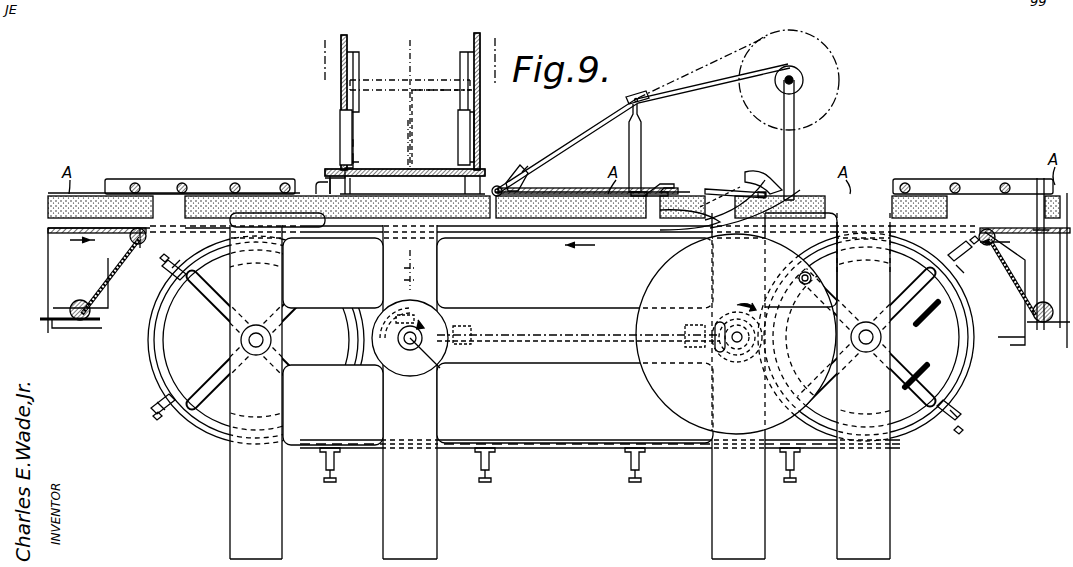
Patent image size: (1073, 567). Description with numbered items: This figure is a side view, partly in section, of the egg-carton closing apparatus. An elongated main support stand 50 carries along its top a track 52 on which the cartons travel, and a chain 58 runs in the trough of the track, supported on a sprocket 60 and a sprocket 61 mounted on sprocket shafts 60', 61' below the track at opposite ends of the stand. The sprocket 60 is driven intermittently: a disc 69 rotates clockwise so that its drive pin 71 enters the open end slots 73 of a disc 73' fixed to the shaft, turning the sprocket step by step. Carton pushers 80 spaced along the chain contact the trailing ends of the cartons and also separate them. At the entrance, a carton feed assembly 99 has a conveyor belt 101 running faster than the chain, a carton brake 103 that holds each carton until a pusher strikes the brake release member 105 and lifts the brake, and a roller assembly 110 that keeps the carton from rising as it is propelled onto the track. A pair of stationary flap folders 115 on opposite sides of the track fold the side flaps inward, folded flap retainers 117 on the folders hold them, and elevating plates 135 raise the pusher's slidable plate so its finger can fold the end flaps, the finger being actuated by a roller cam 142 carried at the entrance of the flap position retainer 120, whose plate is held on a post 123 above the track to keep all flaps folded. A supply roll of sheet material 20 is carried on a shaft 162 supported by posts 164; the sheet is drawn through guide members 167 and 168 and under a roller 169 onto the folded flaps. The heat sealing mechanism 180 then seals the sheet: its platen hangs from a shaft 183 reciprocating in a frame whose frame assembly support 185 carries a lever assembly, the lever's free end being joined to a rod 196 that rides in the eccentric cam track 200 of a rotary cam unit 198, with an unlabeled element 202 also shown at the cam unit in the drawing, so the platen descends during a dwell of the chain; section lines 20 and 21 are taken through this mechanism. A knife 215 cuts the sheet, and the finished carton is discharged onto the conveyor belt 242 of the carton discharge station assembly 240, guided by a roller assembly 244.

The sheet material 20 is at (344, 31).
The section line 21 is at (526, 31).
The main support stand 50 is at (230, 512).
The track 52 is at (623, 232).
The chain 58 is at (525, 222).
The sprocket 60 is at (887, 337).
The sprocket shaft 60' is at (861, 180).
The sprocket 61 is at (256, 340).
The sprocket shaft 61' is at (256, 320).
The disc 69 is at (648, 267).
The drive pin 71 is at (800, 295).
The open end slots 73 is at (926, 170).
The disc 73' is at (940, 211).
The carton pushers 80 is at (156, 426).
The carton feed assembly 99 is at (1056, 350).
The conveyor belt 101 is at (1008, 228).
The carton brake 103 is at (1023, 186).
The brake release member 105 is at (1012, 340).
The roller assembly 110 is at (940, 178).
The flap folders 115 is at (766, 172).
The folded flap retainers 117 is at (716, 188).
The flap position retainer 120 is at (580, 180).
The post 123 is at (640, 146).
The elevating plates 135 is at (672, 228).
The roller cam 142 is at (676, 182).
The shaft 162 is at (806, 82).
The posts 164 is at (802, 121).
The guide member 167 is at (648, 78).
The guide member 168 is at (523, 168).
The roller 169 is at (499, 185).
The heat sealing mechanism 180 is at (389, 160).
The shaft 183 is at (340, 64).
The frame assembly support 185 is at (358, 62).
The rod 196 is at (418, 144).
The rotary cam unit 198 is at (430, 312).
The cam track 200 is at (412, 374).
The crank arm 202 is at (438, 368).
The knife 215 is at (320, 180).
The carton discharge station assembly 240 is at (58, 261).
The conveyor belt 242 is at (129, 284).
The roller assembly 244 is at (230, 184).